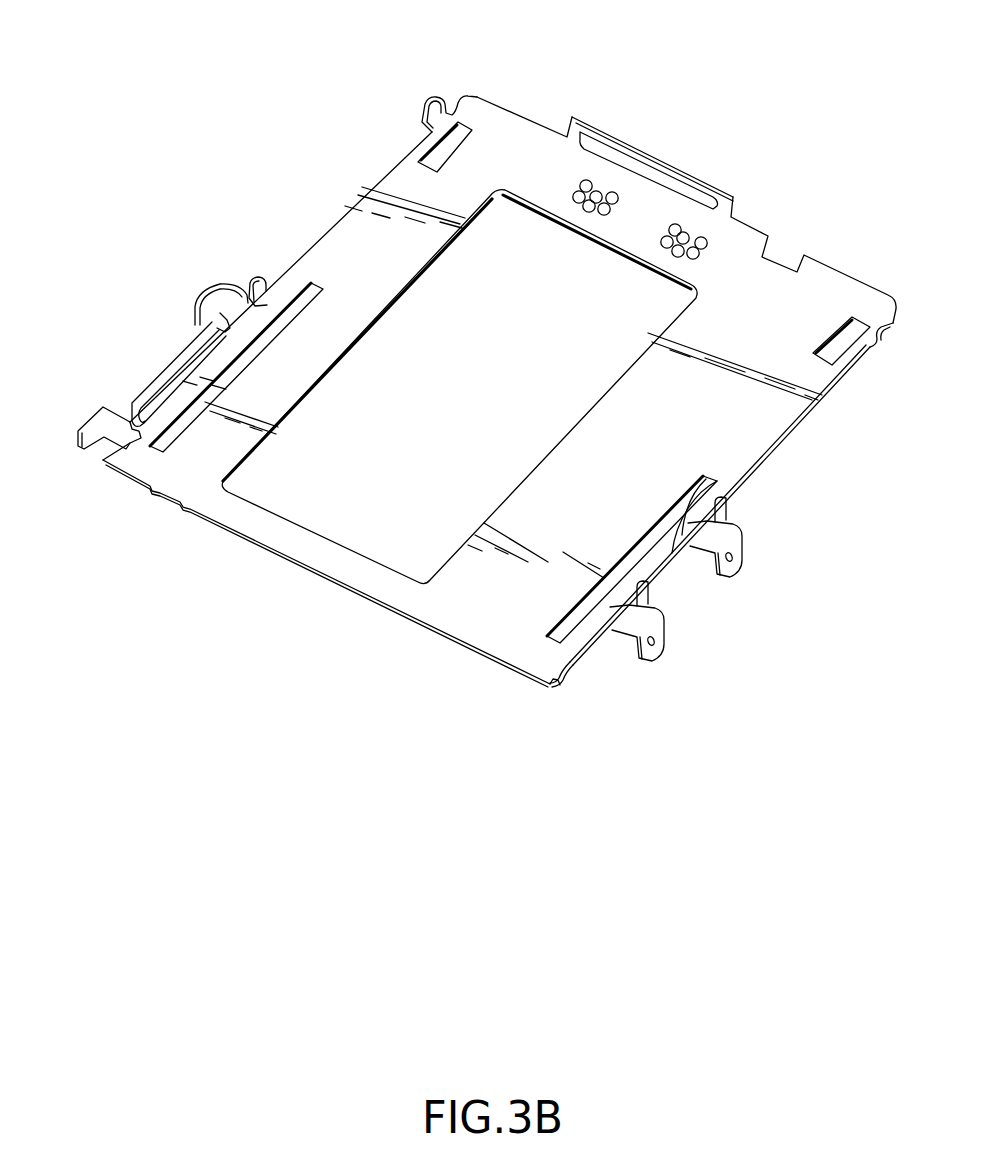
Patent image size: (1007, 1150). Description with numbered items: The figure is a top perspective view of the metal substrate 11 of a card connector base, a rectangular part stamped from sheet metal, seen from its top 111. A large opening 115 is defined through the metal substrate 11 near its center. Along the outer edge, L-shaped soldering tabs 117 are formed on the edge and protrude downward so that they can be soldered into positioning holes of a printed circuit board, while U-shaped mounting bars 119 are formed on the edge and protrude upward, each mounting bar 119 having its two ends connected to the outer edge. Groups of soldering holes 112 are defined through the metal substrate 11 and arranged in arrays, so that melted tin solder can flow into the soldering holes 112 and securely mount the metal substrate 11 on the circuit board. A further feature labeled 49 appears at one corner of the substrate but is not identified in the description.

The metal substrate 11 is at (208, 48).
The top 111 is at (482, 603).
The soldering holes 112 is at (676, 228).
The opening 115 is at (317, 489).
The soldering tabs 117 is at (213, 292).
The mounting bars 119 is at (592, 132).
The hook 49 is at (578, 650).